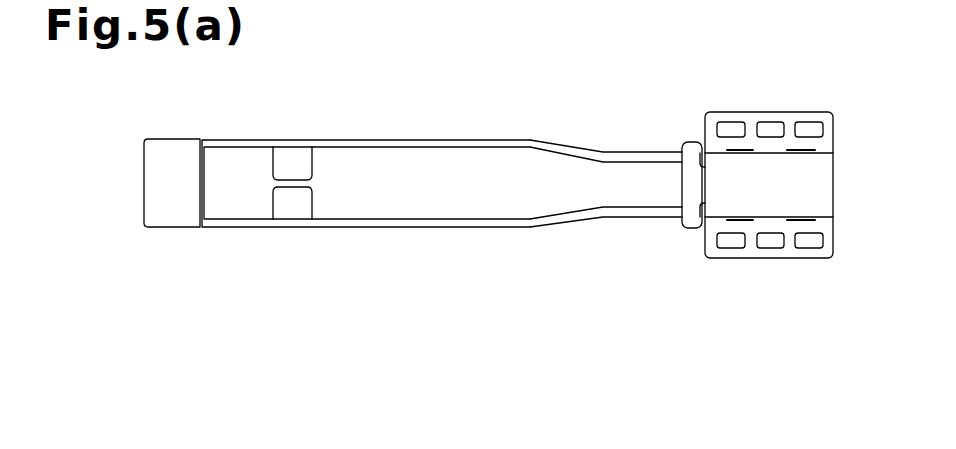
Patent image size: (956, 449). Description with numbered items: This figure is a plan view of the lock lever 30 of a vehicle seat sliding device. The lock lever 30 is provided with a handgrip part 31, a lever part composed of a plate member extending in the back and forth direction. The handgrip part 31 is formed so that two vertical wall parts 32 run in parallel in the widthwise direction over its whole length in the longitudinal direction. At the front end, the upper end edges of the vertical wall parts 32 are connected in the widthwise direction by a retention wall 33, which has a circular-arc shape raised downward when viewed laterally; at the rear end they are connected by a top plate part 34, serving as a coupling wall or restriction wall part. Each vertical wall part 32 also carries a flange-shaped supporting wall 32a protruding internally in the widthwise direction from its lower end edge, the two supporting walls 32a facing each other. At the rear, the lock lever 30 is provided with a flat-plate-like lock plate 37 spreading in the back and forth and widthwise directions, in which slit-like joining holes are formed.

The lock lever 30 is at (655, 108).
The handgrip part 31 is at (533, 140).
The vertical wall parts 32 is at (408, 138).
The supporting wall 32a is at (305, 168).
The retention wall 33 is at (175, 145).
The top plate part 34 is at (691, 224).
The lock plate 37 is at (718, 257).